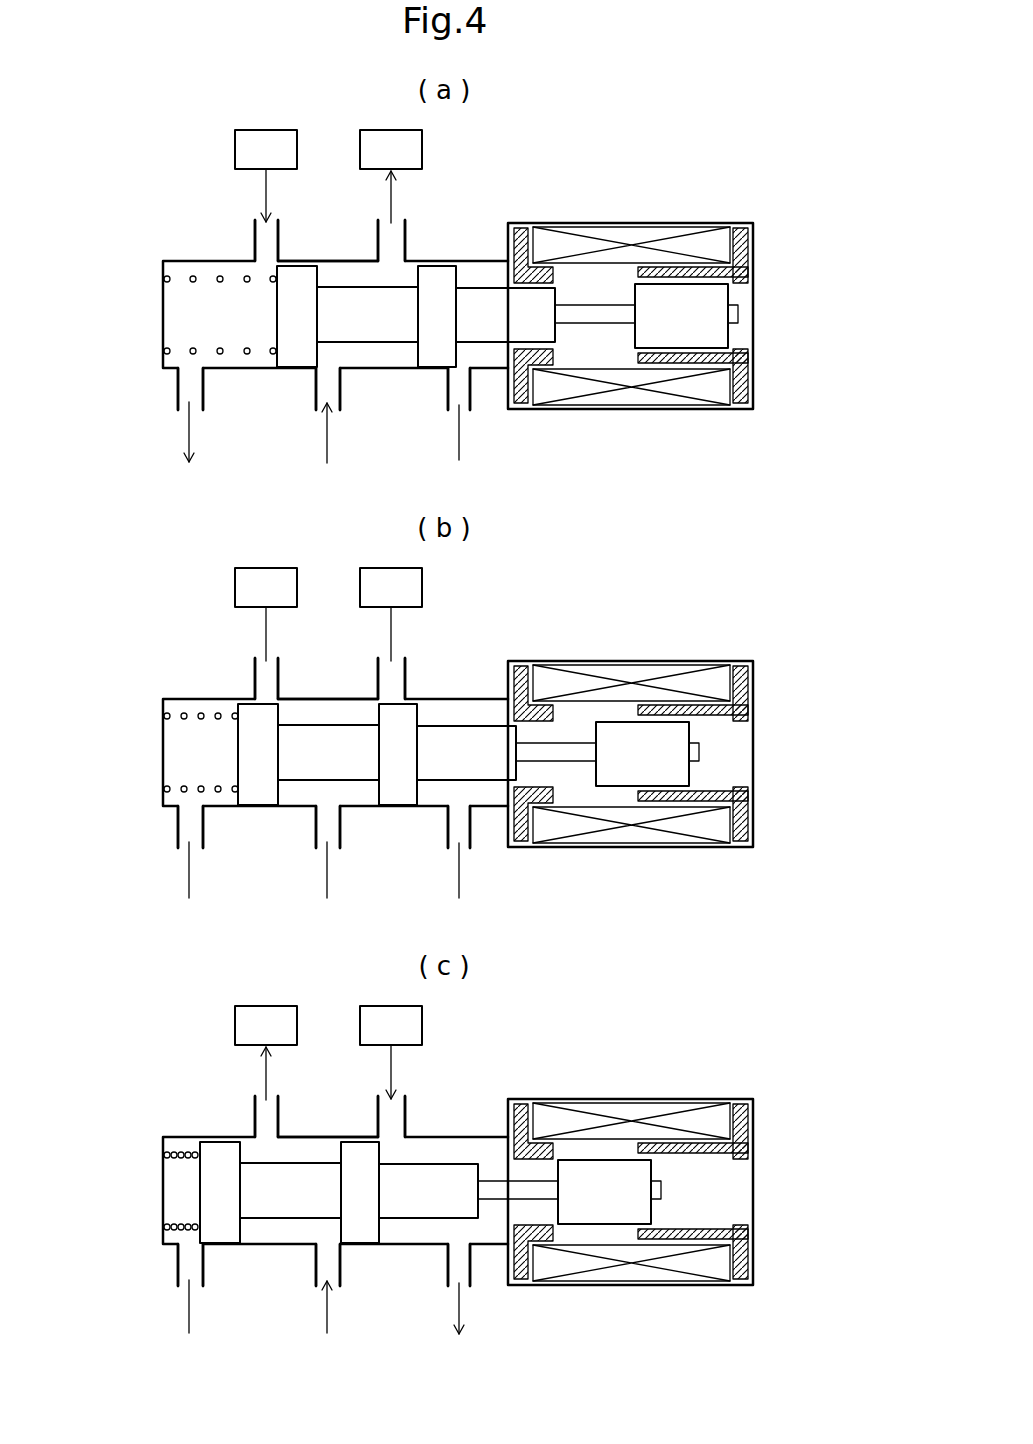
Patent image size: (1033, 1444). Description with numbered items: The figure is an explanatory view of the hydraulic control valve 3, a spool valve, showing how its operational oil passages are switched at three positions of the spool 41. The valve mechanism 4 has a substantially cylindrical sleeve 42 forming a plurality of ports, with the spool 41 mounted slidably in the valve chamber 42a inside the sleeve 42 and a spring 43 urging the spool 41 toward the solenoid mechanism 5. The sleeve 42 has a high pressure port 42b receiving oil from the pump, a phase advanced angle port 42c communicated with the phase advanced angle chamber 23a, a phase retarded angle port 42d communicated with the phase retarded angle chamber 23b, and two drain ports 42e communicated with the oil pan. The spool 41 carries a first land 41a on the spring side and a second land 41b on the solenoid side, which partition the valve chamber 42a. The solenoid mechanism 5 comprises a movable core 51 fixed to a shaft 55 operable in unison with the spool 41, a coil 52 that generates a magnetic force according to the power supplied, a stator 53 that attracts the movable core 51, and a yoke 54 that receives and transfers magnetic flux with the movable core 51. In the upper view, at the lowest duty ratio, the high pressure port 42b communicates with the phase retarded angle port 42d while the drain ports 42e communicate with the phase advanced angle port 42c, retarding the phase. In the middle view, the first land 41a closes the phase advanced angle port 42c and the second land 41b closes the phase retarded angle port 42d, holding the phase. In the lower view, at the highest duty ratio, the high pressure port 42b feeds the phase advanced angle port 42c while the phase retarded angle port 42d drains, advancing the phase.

The hydraulic control valve 3 is at (456, 732).
The valve mechanism 4 is at (319, 732).
The solenoid mechanism 5 is at (638, 709).
The phase advanced angle chamber 23a is at (266, 615).
The phase retarded angle chamber 23b is at (391, 614).
The spool 41 is at (330, 789).
The first land 41a is at (293, 357).
The second land 41b is at (433, 350).
The sleeve 42 is at (163, 313).
The valve chamber 42a is at (360, 273).
The high pressure port 42b is at (356, 850).
The phase advanced angle port 42c is at (236, 660).
The phase retarded angle port 42d is at (404, 244).
The drain ports 42e is at (322, 851).
The spring 43 is at (184, 768).
The movable core 51 is at (738, 333).
The coil 52 is at (631, 715).
The stator 53 is at (522, 714).
The yoke 54 is at (727, 753).
The shaft 55 is at (596, 322).